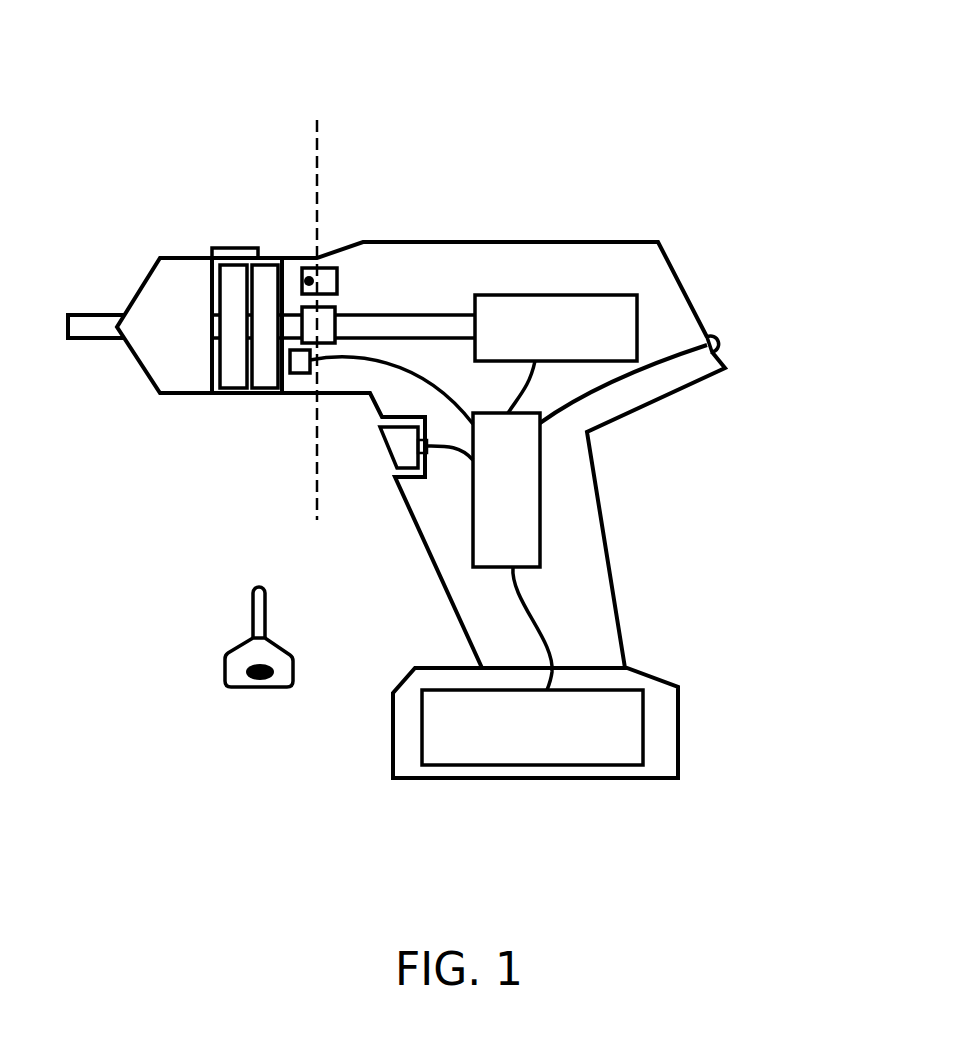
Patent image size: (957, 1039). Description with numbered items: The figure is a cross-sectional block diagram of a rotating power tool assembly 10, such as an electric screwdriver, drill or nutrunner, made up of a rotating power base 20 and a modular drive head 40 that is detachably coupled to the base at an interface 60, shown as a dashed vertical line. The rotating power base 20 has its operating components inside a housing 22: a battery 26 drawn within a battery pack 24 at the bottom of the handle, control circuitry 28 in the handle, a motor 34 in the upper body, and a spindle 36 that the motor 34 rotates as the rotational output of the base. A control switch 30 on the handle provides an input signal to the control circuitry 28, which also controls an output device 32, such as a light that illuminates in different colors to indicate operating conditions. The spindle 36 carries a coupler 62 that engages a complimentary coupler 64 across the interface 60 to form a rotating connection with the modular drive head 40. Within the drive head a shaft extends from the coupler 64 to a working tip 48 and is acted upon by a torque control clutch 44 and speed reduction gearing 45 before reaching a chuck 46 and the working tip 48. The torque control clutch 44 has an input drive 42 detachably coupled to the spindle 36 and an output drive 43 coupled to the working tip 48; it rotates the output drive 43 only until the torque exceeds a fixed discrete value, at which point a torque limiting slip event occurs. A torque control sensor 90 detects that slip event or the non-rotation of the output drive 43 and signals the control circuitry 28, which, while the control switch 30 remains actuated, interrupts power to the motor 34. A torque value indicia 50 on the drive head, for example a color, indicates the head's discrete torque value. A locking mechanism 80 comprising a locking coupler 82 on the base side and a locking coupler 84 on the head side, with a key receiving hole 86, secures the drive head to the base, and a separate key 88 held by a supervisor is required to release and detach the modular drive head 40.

The rotating power tool assembly 10 is at (503, 43).
The rotating power base 20 is at (622, 202).
The housing 22 is at (670, 257).
The battery pack 24 is at (678, 698).
The battery 26 is at (519, 740).
The control circuitry 28 is at (494, 497).
The control switch 30 is at (388, 450).
The output device 32 is at (713, 347).
The motor 34 is at (543, 337).
The spindle 36 is at (430, 325).
The modular drive head 40 is at (158, 164).
The input drive 42 is at (280, 393).
The output drive 43 is at (250, 393).
The torque control clutch 44 is at (278, 337).
The speed reduction gearing 45 is at (246, 337).
The chuck 46 is at (159, 337).
The working tip 48 is at (90, 330).
The torque value indicia 50 is at (227, 255).
The interface 60 is at (326, 410).
The coupler 62 is at (327, 318).
The complimentary coupler 64 is at (306, 318).
The locking mechanism 80 is at (348, 260).
The locking coupler 82 is at (328, 282).
The locking coupler 84 is at (303, 268).
The lock indicator 86 is at (308, 273).
The key 88 is at (235, 660).
The torque control sensor 90 is at (295, 373).